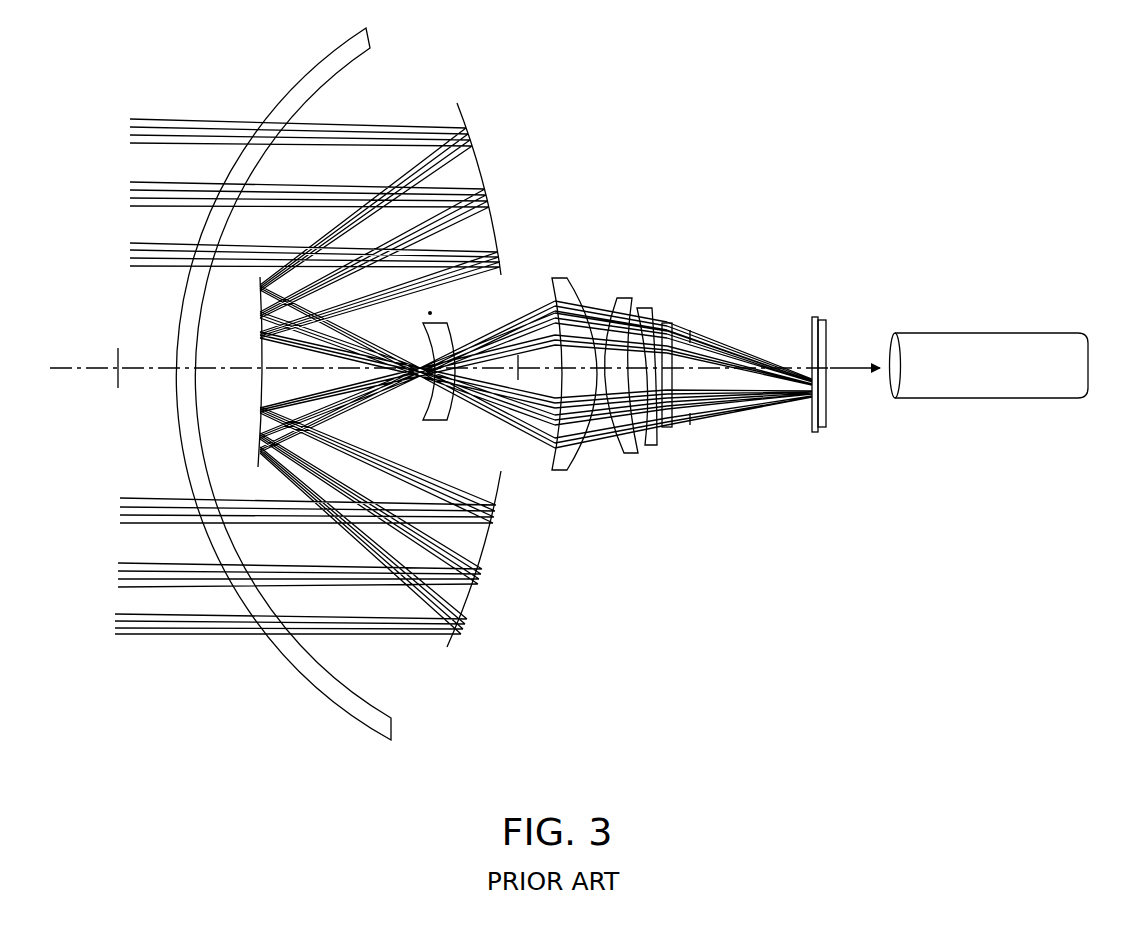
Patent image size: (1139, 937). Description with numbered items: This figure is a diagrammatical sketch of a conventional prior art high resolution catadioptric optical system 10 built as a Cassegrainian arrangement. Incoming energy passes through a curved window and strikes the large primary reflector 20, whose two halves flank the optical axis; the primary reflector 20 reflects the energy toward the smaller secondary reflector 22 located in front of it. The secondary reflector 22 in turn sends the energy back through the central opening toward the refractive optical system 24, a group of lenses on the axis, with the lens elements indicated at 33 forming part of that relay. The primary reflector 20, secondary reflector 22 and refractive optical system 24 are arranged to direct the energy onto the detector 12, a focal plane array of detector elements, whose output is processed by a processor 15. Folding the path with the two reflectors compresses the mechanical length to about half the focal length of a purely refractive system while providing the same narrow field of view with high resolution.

The catadioptric optical system 10 is at (688, 197).
The primary reflector 20 is at (477, 153).
The secondary reflector 22 is at (258, 327).
The refractive optical system 24 is at (553, 492).
The relay lens group 33 is at (527, 303).
The detector 12 is at (826, 350).
The processor 15 is at (1001, 333).